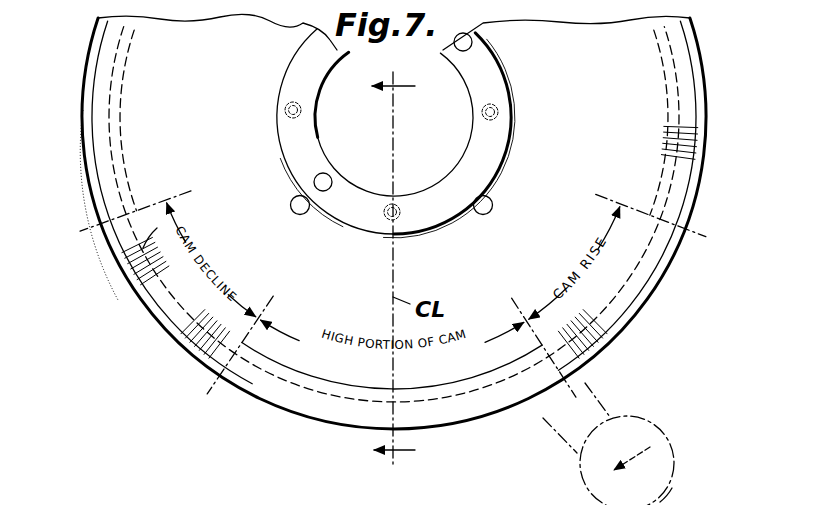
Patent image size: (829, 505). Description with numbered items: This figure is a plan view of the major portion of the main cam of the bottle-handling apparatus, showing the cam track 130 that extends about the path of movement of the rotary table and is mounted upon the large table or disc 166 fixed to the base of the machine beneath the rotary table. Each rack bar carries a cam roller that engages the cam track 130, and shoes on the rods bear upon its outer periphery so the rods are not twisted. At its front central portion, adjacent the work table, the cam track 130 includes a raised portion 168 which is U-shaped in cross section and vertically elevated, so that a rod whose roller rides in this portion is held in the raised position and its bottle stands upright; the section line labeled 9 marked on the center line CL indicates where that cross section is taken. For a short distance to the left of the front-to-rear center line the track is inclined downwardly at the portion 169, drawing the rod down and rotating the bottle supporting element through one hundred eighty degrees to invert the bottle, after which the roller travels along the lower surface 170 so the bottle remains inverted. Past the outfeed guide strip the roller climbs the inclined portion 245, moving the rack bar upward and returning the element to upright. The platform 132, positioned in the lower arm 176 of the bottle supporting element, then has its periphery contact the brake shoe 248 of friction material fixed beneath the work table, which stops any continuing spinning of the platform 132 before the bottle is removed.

The cam track 130 is at (454, 430).
The lower surface of cam track 170 is at (82, 136).
The table or disc 166 is at (205, 113).
The raised portion 168 is at (324, 408).
The inclined portion 169 is at (175, 322).
The inclined portion 245 is at (618, 303).
The lower arm 176 is at (605, 397).
The platform 132 is at (672, 441).
The brake shoe 248 is at (673, 503).
The section line 9- 9 is at (393, 273).